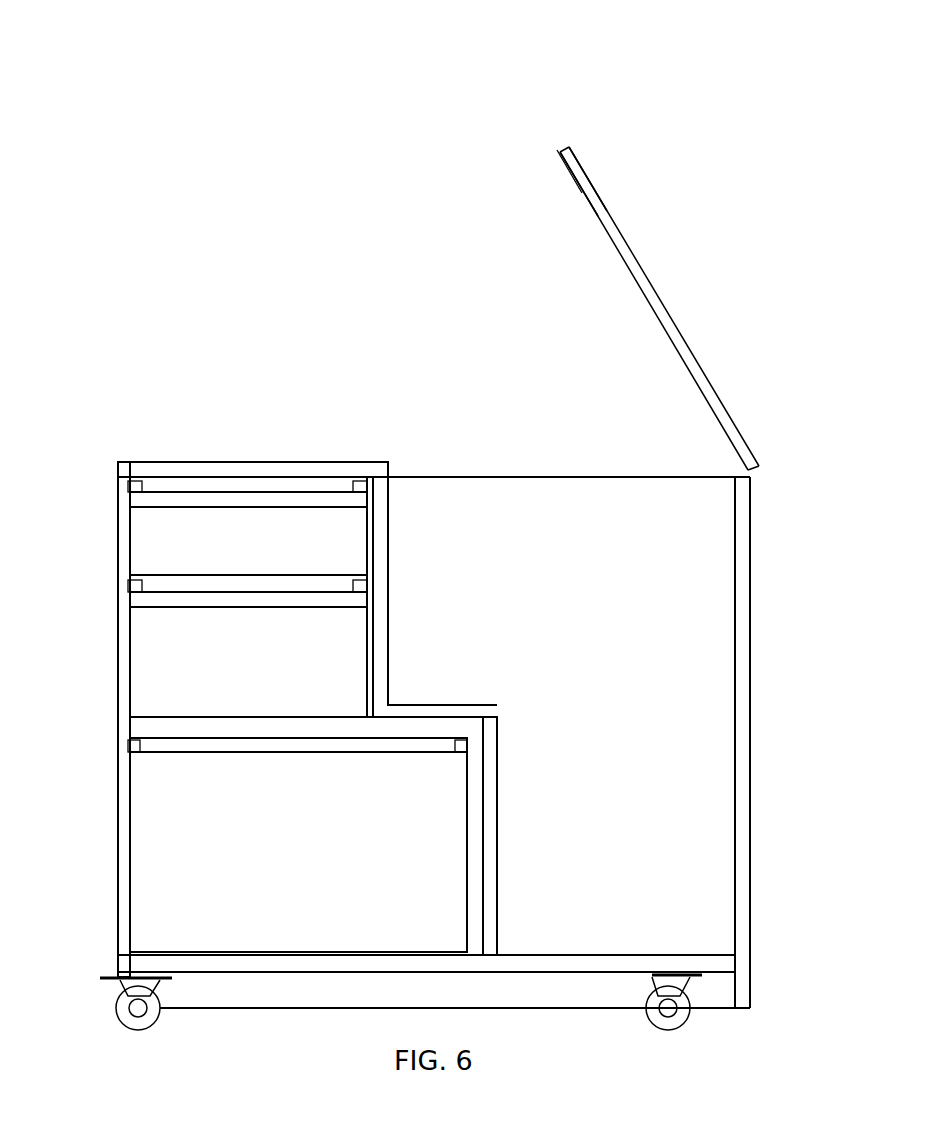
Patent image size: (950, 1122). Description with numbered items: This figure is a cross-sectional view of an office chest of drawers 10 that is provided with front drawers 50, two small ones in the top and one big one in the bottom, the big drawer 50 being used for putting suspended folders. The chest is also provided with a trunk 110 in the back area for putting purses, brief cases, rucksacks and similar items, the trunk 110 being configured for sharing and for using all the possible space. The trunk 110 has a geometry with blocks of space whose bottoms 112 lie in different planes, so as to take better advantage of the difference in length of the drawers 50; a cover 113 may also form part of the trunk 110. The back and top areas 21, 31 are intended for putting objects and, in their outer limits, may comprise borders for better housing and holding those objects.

The office chest of drawers 10 is at (167, 138).
The back area 21 is at (715, 307).
The top area 31 is at (278, 450).
The front drawers 50 is at (253, 870).
The trunk 110 is at (555, 502).
The bottom 112 is at (553, 948).
The cover 113 is at (578, 218).